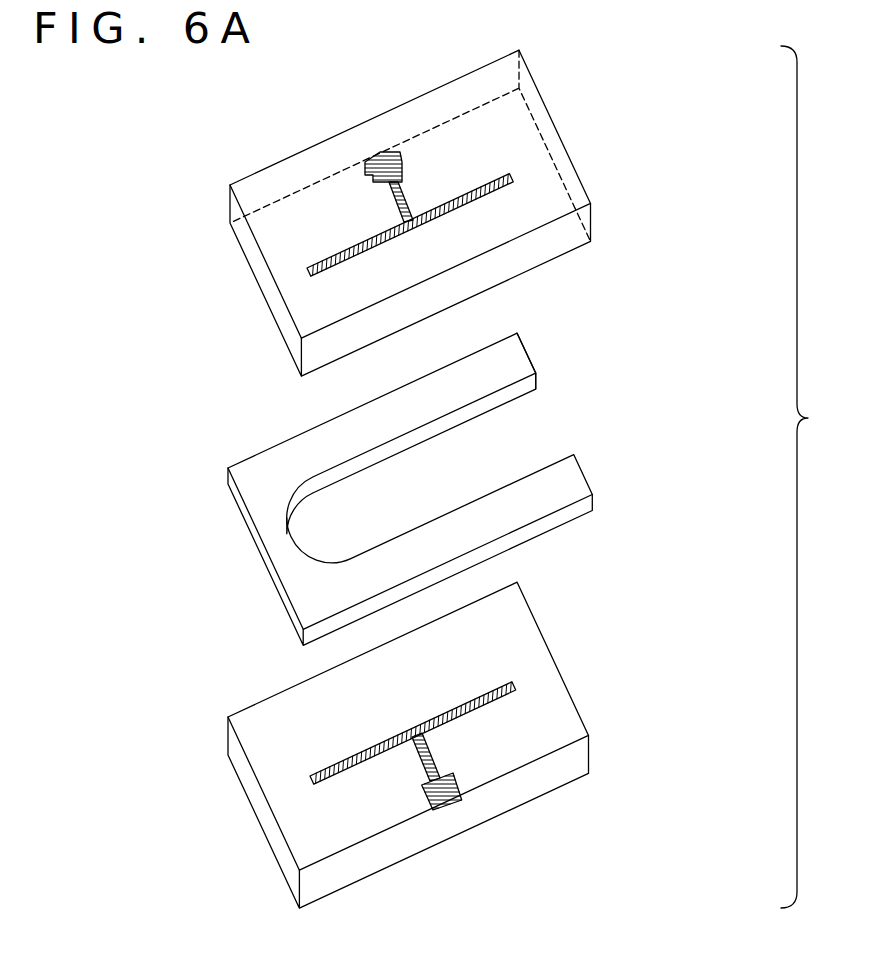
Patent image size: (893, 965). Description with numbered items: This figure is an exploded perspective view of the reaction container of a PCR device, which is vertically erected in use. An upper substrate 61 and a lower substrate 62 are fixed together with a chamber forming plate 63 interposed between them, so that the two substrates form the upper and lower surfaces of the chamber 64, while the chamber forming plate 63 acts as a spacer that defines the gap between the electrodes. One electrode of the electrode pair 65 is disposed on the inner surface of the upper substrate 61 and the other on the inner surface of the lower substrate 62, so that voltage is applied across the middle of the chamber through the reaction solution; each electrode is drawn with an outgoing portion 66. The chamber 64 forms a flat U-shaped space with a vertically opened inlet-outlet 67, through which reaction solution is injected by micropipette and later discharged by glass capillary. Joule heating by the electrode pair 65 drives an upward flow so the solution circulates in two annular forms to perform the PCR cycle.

The upper substrate 61 is at (565, 146).
The lower substrate 62 is at (563, 668).
The chamber forming plate 63 is at (582, 472).
The chamber 64 is at (518, 483).
The electrode pair 65 is at (463, 194).
The outgoing portion 66 is at (363, 178).
The inlet-outlet 67 is at (558, 422).